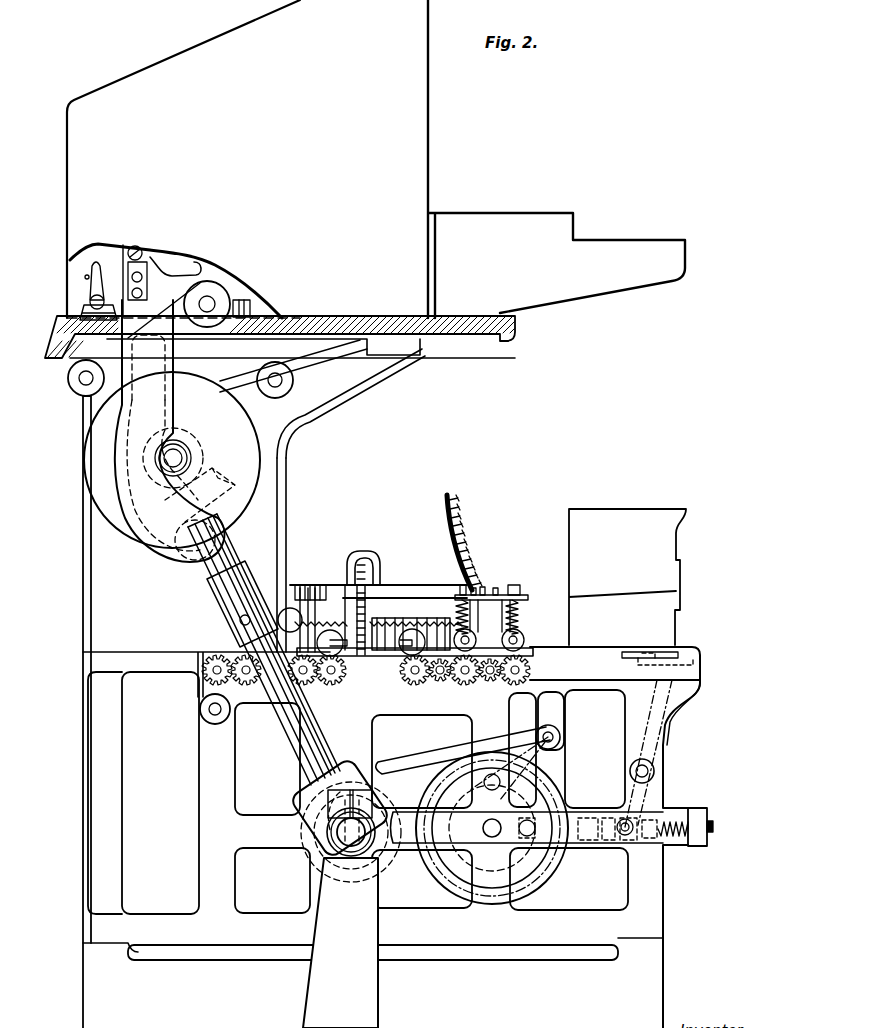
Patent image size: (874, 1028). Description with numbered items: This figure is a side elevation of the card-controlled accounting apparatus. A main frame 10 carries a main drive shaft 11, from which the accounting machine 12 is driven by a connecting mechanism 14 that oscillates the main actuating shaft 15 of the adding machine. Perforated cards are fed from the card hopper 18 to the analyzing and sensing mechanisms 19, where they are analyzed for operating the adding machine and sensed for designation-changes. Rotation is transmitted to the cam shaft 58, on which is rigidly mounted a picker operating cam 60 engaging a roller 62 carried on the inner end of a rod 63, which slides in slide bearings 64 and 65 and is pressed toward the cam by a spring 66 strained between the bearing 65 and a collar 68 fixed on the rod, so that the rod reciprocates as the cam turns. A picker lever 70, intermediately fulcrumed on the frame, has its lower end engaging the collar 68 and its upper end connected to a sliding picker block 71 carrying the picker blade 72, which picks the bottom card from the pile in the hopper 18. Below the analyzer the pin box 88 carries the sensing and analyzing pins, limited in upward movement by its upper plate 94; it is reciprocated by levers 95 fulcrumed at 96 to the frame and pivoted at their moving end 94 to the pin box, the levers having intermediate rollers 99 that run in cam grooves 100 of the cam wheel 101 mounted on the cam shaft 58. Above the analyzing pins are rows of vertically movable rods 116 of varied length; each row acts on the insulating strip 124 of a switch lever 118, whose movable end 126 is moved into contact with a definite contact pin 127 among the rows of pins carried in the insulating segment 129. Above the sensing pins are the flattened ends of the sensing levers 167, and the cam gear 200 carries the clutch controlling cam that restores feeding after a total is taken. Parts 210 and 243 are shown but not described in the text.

The main frame 10 is at (647, 892).
The main drive shaft 11 is at (350, 858).
The accounting machine 12 is at (430, 144).
The connecting mechanism 14 is at (263, 523).
The main actuating shaft 15 is at (208, 300).
The card hopper 18 is at (603, 520).
The analyzing and sensing mechanisms 19 is at (397, 550).
The cam shaft 58 is at (492, 827).
The picker operating cam 60 is at (492, 867).
The roller 62 is at (530, 845).
The rod 63 is at (590, 823).
The slide bearing 64 is at (592, 842).
The slide bearing 65 is at (703, 810).
The spring 66 is at (670, 837).
The collar 68 is at (610, 843).
The picker lever 70 is at (667, 723).
The sliding picker block 71 is at (645, 662).
The picker blade 72 is at (660, 652).
The pin box 88 is at (263, 735).
The upper plate of the pin box 94 is at (380, 768).
The levers 95 is at (488, 738).
The fulcrum 96 is at (560, 742).
The rollers 99 is at (513, 777).
The cam grooves 100 is at (555, 792).
The cam wheel 101 is at (560, 862).
The vertically movable rods 116 is at (330, 583).
The switch lever 118 is at (407, 585).
The insulating strip 124 is at (310, 585).
The movable ends 126 is at (465, 582).
The contact pins 127 is at (460, 508).
The segment 129 is at (462, 552).
The sensing levers 167 is at (377, 623).
The cam gear 200 is at (368, 580).
The hub housing 210 is at (308, 865).
The latch lever 243 is at (88, 303).